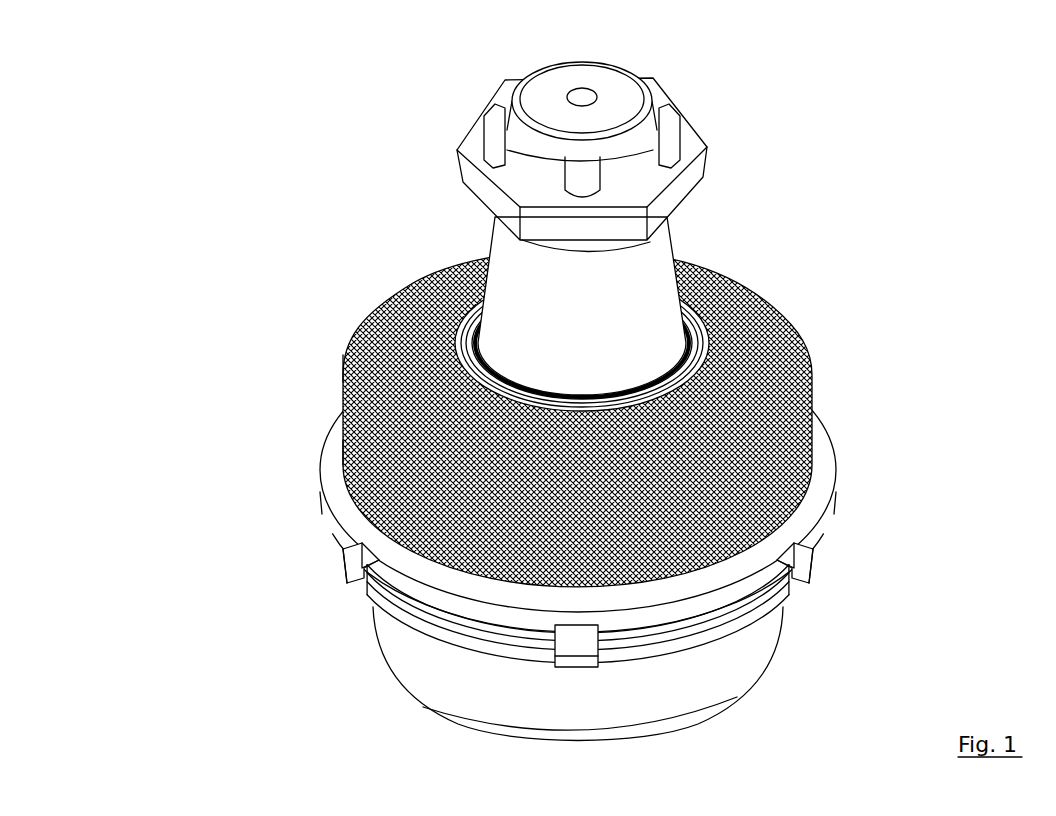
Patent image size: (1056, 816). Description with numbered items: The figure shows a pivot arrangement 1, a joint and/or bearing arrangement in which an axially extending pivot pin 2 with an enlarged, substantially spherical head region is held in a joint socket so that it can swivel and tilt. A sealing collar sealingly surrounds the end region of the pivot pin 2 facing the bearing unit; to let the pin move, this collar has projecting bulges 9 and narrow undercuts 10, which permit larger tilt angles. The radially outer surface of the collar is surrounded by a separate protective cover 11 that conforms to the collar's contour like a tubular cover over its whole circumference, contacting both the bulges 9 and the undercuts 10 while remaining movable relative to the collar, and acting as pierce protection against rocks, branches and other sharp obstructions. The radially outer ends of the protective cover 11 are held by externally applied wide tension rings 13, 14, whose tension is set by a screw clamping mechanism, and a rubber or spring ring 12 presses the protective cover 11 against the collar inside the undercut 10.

The pivot arrangement 1 is at (804, 133).
The pivot pin 2 is at (653, 276).
The projecting bulges 9 is at (343, 368).
The narrow undercuts 10 is at (343, 410).
The protective cover 11 is at (775, 307).
The spring ring 12 is at (812, 443).
The tension ring 13 is at (777, 532).
The tension ring 14 is at (413, 283).